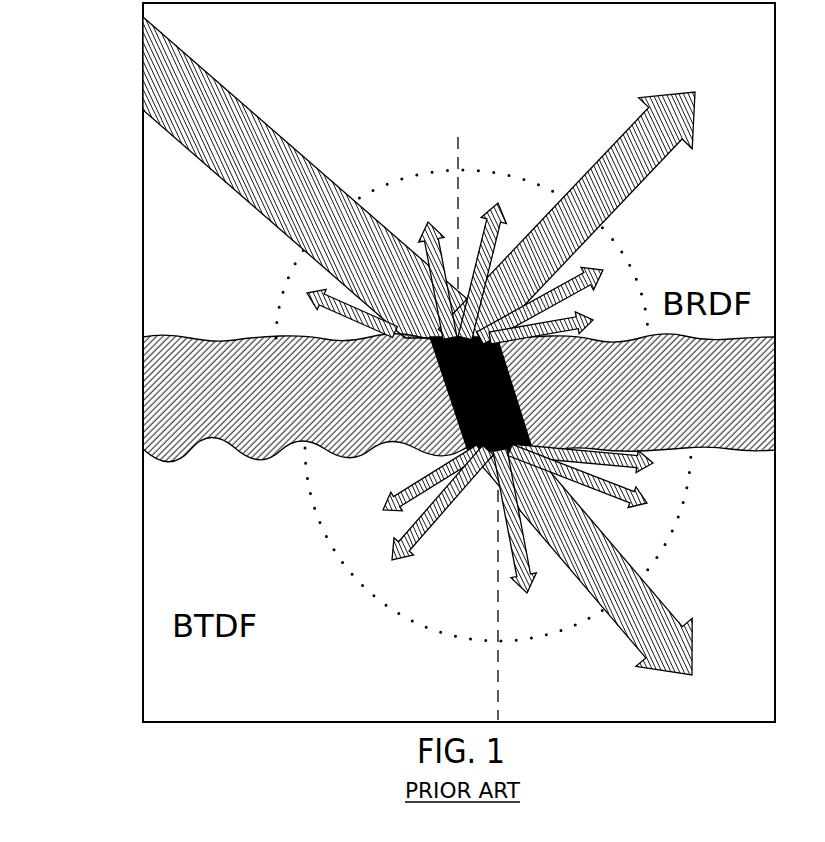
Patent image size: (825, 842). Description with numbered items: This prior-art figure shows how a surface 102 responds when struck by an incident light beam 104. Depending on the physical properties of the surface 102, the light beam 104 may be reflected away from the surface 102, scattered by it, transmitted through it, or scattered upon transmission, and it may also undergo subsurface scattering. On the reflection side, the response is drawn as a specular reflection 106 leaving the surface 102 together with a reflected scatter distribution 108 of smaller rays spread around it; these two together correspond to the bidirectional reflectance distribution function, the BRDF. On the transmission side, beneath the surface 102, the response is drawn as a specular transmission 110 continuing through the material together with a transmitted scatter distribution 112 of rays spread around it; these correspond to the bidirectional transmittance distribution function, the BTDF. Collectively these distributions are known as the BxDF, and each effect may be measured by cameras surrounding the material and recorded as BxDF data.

The surface 102 is at (150, 395).
The incident light beam 104 is at (298, 243).
The specular reflection 106 is at (640, 125).
The reflected scatter distribution 108 is at (497, 190).
The specular transmission 110 is at (693, 665).
The transmitted scatter distribution 112 is at (522, 598).